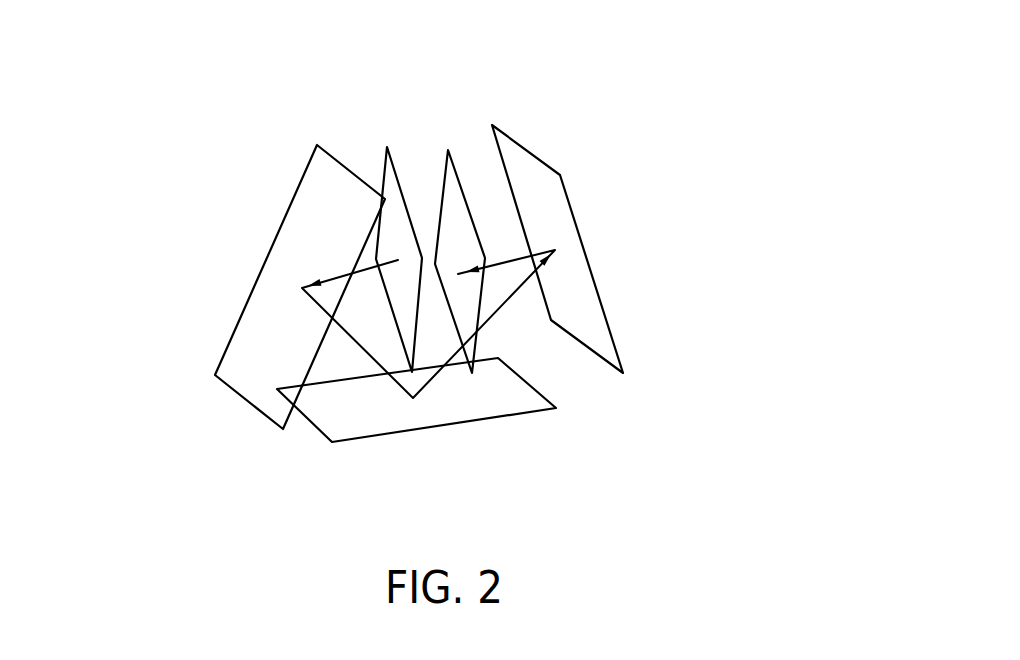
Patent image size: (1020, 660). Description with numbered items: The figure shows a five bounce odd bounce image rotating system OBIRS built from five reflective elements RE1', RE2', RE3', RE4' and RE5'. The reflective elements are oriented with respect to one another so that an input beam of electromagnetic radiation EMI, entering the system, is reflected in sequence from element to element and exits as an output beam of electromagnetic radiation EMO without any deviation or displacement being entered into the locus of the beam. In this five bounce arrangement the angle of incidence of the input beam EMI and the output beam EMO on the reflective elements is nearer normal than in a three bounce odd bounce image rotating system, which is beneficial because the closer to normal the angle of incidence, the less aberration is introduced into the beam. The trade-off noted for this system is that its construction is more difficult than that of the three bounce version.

The odd bounce image rotating system OBIRS is at (715, 122).
The reflective element RE1' is at (343, 215).
The reflective element RE2' is at (231, 287).
The reflective element RE3' is at (432, 423).
The reflective element RE4' is at (586, 232).
The reflective element RE5' is at (501, 211).
The input beam of electromagnetic radiation EMI is at (398, 260).
The output beam of electromagnetic radiation EMO is at (458, 274).